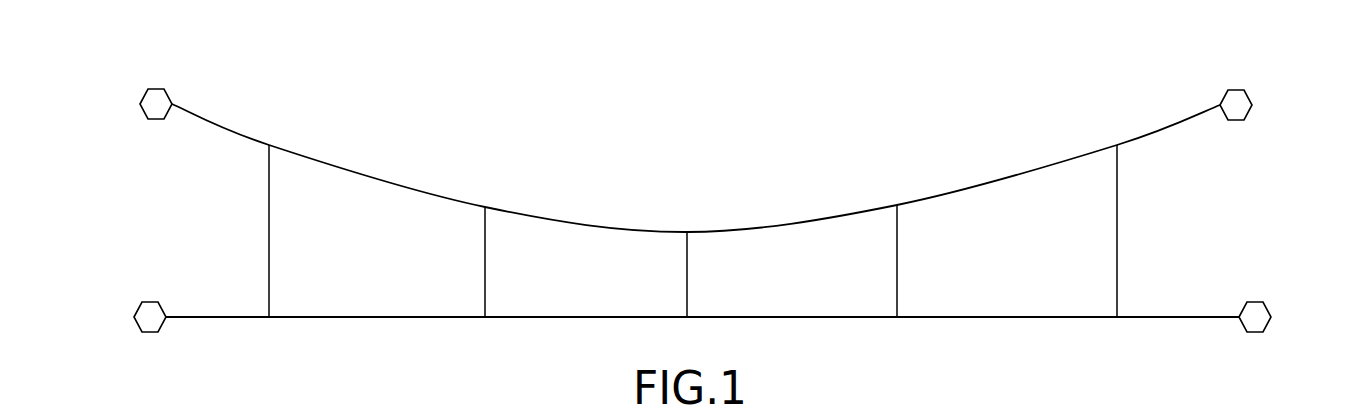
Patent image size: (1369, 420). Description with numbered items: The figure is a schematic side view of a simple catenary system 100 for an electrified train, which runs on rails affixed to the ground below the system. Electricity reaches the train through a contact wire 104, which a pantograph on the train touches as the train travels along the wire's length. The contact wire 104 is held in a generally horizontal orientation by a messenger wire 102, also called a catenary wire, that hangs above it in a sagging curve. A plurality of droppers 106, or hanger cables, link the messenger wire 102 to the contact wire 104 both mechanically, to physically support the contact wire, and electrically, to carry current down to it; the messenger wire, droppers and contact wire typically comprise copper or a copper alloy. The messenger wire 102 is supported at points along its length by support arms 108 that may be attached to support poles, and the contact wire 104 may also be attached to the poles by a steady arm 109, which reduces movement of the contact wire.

The simple catenary system 100 is at (836, 156).
The messenger wire 102 is at (458, 199).
The contact wire 104 is at (1142, 317).
The droppers 106 is at (897, 266).
The support arms 108 is at (1228, 90).
The steady arm 109 is at (1267, 309).